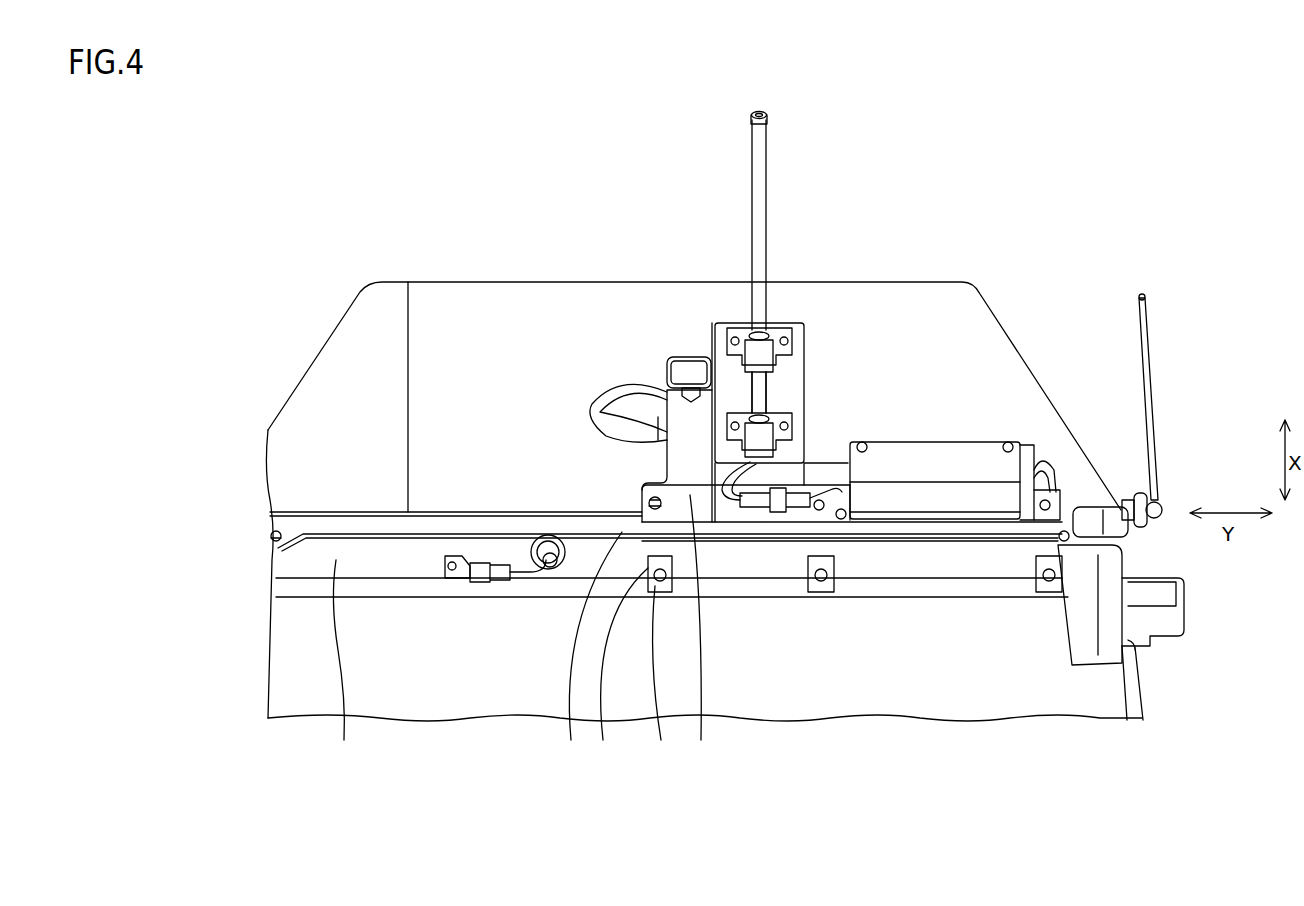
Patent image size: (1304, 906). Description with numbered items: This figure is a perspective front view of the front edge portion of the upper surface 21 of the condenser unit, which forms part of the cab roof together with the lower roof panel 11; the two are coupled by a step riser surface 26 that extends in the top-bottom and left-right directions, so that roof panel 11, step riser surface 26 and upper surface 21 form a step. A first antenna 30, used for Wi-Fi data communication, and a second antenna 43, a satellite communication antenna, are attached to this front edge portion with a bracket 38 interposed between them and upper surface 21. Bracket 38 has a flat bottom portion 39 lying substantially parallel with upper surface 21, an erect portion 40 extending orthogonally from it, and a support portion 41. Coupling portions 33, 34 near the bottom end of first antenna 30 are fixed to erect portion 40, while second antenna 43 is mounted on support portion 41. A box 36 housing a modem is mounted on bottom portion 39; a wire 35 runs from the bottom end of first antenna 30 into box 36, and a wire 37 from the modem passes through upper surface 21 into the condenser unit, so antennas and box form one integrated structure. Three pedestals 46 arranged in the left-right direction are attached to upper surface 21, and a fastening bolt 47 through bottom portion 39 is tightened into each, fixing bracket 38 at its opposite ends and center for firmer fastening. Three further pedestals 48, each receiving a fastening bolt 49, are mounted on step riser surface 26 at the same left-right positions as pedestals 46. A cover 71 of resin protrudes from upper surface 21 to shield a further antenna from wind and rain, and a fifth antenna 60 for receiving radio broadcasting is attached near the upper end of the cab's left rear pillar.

The roof panel 11 is at (400, 640).
The upper surface 21 is at (505, 330).
The step riser surface 26 is at (314, 648).
The first antenna 30 is at (752, 153).
The coupling portion 33 is at (776, 342).
The coupling portion 34 is at (843, 456).
The wire 35 is at (724, 490).
The box 36 is at (910, 465).
The wire 37 is at (1035, 468).
The bracket 38 is at (822, 424).
The bottom portion 39 is at (703, 355).
The erect portion 40 is at (820, 370).
The support portion 41 is at (642, 400).
The second antenna 43 is at (683, 352).
The pedestal 46 is at (533, 649).
The fastening bolt 47 is at (701, 630).
The pedestal 48 is at (718, 614).
The fastening bolt 49 is at (661, 661).
The fifth antenna 60 is at (1143, 334).
The cover 71 is at (639, 404).